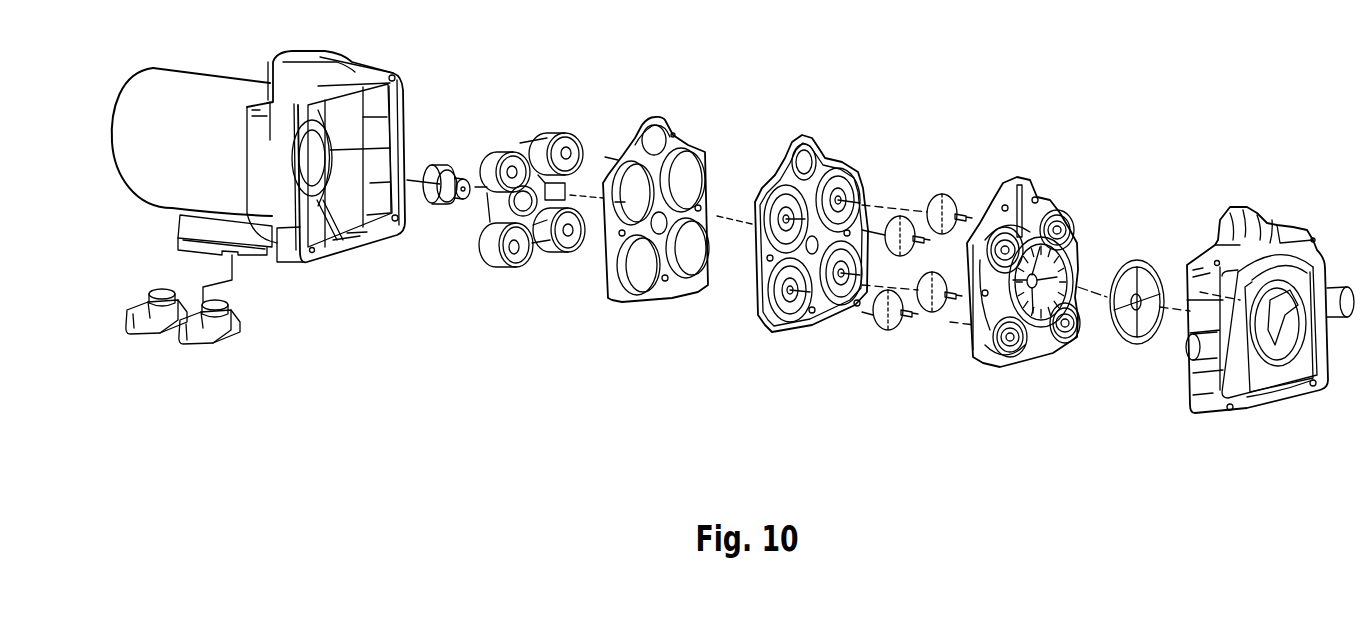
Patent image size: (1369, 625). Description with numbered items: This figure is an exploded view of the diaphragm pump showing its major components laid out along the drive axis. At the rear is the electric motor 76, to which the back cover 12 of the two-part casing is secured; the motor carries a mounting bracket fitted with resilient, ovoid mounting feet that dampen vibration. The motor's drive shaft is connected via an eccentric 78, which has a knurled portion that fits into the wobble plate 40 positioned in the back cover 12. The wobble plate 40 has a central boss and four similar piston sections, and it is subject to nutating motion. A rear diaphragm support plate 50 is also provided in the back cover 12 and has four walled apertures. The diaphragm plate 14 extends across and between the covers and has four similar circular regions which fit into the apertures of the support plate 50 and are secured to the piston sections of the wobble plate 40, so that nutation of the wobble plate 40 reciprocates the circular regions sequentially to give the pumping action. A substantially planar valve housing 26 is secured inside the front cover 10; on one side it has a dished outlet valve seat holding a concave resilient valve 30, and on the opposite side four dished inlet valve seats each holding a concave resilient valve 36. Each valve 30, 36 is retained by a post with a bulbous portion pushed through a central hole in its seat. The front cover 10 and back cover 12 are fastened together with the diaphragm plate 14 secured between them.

The electric motor 76 is at (200, 87).
The back cover 12 is at (343, 255).
The eccentric 78 is at (452, 212).
The wobble plate 40 is at (520, 260).
The rear diaphragm support plate 50 is at (667, 295).
The diaphragm plate 14 is at (817, 312).
The inlet valve 36 is at (927, 312).
The valve housing 26 is at (1027, 355).
The outlet valve 30 is at (1137, 345).
The front cover 10 is at (1265, 397).